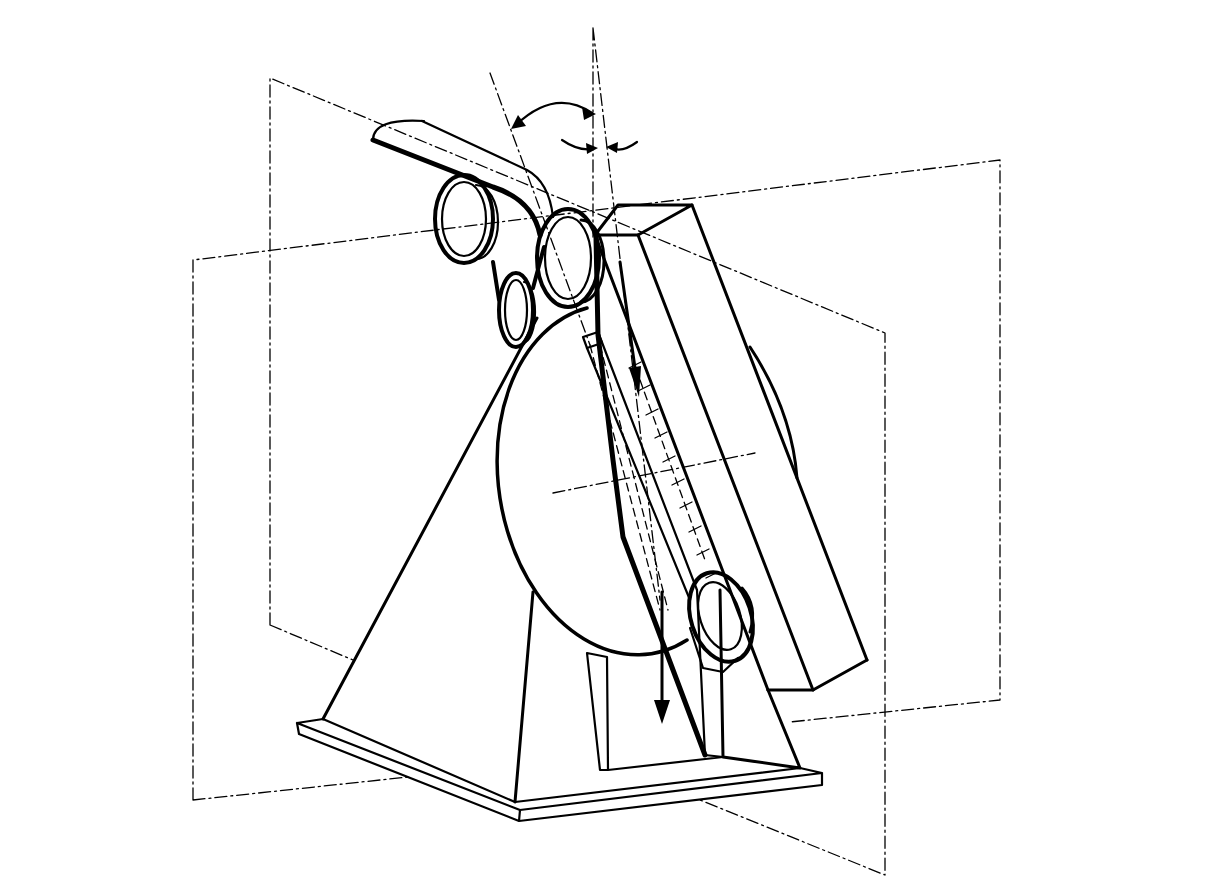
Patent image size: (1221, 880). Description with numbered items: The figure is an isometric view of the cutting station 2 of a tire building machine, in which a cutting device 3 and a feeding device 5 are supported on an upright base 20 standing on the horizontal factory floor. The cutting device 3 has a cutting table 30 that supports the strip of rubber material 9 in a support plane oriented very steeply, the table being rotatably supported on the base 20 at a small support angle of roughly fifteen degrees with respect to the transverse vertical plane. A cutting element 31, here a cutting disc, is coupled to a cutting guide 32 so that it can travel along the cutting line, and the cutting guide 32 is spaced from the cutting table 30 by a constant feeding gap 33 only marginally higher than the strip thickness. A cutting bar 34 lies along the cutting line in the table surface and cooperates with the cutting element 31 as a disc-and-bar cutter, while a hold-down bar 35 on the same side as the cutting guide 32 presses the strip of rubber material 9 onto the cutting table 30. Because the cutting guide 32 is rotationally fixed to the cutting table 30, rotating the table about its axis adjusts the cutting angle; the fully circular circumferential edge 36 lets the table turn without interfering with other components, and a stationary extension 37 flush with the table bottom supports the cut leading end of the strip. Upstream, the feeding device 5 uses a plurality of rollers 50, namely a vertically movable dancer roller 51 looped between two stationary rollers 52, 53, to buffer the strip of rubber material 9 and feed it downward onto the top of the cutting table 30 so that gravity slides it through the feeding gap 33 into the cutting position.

The cutting station 2 is at (830, 279).
The cutting device 3 is at (777, 403).
The feeding device 5 is at (443, 250).
The strip of rubber material 9 is at (462, 142).
The base 20 is at (387, 632).
The cutting table 30 is at (523, 538).
The cutting element 31 is at (723, 623).
The cutting guide 32 is at (817, 560).
The feeding gap 33 is at (610, 290).
The cutting bar 34 is at (583, 340).
The hold-down bar 35 is at (615, 440).
The circular circumferential edge 36 is at (532, 590).
The stationary extension 37 is at (660, 742).
The rollers 50 is at (518, 258).
The dancer roller 51 is at (500, 317).
The stationary roller 52 is at (453, 215).
The stationary roller 53 is at (583, 217).